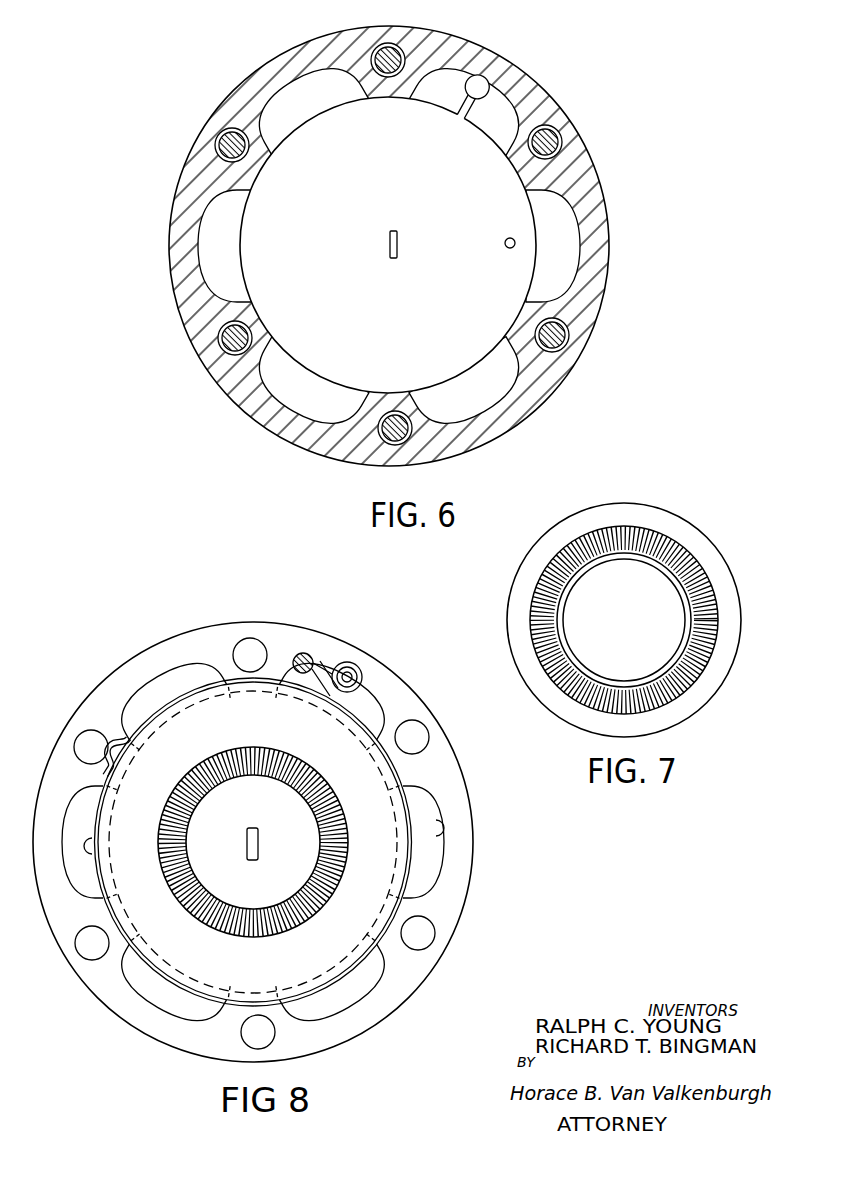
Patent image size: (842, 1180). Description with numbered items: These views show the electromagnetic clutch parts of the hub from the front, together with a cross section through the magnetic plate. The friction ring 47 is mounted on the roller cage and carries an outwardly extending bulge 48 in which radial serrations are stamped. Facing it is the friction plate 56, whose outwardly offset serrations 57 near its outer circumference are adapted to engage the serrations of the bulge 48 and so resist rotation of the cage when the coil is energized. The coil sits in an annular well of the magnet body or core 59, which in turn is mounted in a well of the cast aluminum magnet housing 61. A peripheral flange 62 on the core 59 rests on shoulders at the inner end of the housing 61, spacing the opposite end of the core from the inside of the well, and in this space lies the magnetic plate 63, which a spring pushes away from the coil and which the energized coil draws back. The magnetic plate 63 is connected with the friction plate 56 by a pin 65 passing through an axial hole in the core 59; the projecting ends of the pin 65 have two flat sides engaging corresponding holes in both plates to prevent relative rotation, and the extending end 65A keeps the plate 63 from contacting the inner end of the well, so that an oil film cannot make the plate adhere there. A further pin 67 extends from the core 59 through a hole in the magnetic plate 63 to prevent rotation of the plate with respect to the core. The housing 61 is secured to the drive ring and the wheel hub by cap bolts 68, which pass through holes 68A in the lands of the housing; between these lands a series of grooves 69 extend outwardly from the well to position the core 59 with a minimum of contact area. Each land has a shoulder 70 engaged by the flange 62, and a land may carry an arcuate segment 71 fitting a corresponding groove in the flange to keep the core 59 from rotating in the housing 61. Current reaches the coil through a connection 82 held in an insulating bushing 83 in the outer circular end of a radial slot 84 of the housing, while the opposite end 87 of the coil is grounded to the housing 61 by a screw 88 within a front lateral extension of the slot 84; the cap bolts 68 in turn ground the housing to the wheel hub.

In FIG. 7, the friction ring 47 is at (726, 672).
In FIG. 7, the outwardly extending bulge 48 is at (688, 550).
In FIG. 8, the friction plate 56 is at (268, 807).
In FIG. 8, the serrations 57 is at (303, 893).
In FIG. 8, the magnet body or core 59 is at (385, 826).
In FIG. 6, the magnet housing 61 is at (183, 258).
In FIG. 8, the magnet housing 61 is at (458, 904).
In FIG. 8, the peripheral flange 62 is at (91, 846).
In FIG. 6, the magnetic plate 63 is at (445, 312).
In FIG. 8, the pin 65 is at (247, 840).
In FIG. 6, the extending end of pin 65A is at (398, 236).
In FIG. 6, the pin 67 is at (511, 249).
In FIG. 6, the cap bolts 68 is at (560, 133).
In FIG. 8, the holes for cap bolts 68A is at (252, 638).
In FIG. 6, the grooves 69 is at (307, 75).
In FIG. 8, the grooves 69 is at (166, 679).
In FIG. 8, the shoulder 70 is at (146, 735).
In FIG. 8, the arcuate segment 71 is at (112, 947).
In FIG. 8, the connection 82 is at (360, 677).
In FIG. 8, the insulating bushing 83 is at (350, 665).
In FIG. 8, the radial slot 84 is at (338, 695).
In FIG. 8, the opposite end of magnet coil 87 is at (324, 668).
In FIG. 8, the screw 88 is at (305, 653).